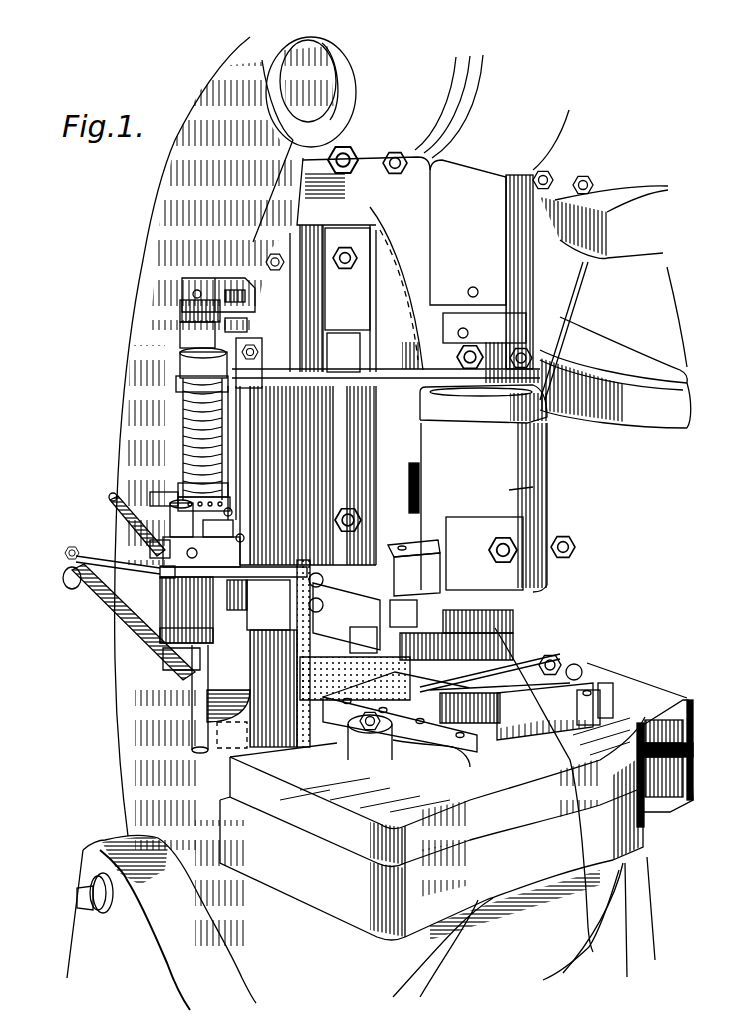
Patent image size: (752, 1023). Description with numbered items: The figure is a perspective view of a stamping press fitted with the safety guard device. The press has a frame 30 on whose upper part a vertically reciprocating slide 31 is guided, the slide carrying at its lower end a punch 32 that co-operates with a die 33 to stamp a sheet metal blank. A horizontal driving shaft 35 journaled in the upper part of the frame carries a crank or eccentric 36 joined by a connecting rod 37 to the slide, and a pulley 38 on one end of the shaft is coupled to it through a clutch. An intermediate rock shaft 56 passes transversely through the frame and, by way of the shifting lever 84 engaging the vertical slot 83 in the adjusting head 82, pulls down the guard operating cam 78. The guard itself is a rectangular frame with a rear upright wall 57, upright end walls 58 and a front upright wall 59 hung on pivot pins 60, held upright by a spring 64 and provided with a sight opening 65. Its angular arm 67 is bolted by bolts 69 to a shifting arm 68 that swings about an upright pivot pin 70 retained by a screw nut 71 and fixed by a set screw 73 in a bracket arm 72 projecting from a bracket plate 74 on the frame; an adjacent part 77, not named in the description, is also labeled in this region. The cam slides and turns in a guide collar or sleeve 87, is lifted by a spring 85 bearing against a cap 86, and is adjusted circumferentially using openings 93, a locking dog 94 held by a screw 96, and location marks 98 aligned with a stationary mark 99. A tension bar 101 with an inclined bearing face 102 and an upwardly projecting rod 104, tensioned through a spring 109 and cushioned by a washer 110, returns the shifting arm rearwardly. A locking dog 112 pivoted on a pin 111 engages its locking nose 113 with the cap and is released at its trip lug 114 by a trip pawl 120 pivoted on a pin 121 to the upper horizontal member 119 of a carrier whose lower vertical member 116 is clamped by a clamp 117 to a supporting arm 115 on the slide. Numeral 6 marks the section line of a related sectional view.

The section line 6— 6 is at (547, 709).
The frame 30 is at (660, 913).
The vertically reciprocating slide 31 is at (478, 383).
The movable tool or punch 32 is at (490, 613).
The die 33 is at (507, 670).
The horizontal driving shaft 35 is at (322, 82).
The crank or eccentric 36 is at (463, 90).
The connecting rod 37 is at (468, 232).
The pulley 38 is at (615, 307).
The intermediate rock shaft 56 is at (64, 580).
The rear upright wall 57 is at (346, 616).
The upright end walls 58 is at (383, 625).
The front upright wall 59 is at (367, 675).
The pivot pins 60 is at (380, 553).
The spring 64 is at (332, 742).
The sight opening 65 is at (468, 712).
The angular arm 67 is at (305, 637).
The shifting arm 68 is at (186, 628).
The bolts 69 is at (329, 589).
The upright pivot pin 70 is at (150, 548).
The screw nut 71 is at (163, 657).
The bracket arm 72 is at (233, 557).
The set screw 73 is at (163, 574).
The bracket plate 74 is at (232, 424).
The slide block 77 is at (186, 610).
The guard operating cam 78 is at (182, 420).
The adjusting head 82 is at (207, 700).
The vertical slot 83 is at (217, 735).
The shifting lever 84 is at (106, 619).
The spring 85 is at (178, 490).
The cap 86 is at (180, 366).
The guide collar or sleeve 87 is at (225, 515).
The openings 93 is at (150, 497).
The locking dog 94 is at (244, 538).
The screw 96 is at (232, 512).
The location marks 98 is at (205, 500).
The stationary mark 99 is at (112, 510).
The tension bar 101 is at (278, 653).
The inclined bearing face 102 is at (249, 592).
The upwardly projecting rod 104 is at (178, 500).
The spring 109 is at (93, 560).
The washer 110 is at (208, 766).
The pin 111 is at (203, 285).
The locking dog 112 is at (180, 338).
The locking nose or shoulder 113 is at (178, 384).
The trip or releasing lug 114 is at (180, 306).
The supporting arm 115 is at (388, 380).
The lower vertical member 116 is at (247, 325).
The clamp 117 is at (231, 361).
The upper horizontal member 119 is at (262, 268).
The trip pawl 120 is at (190, 280).
The pin 121 is at (245, 298).